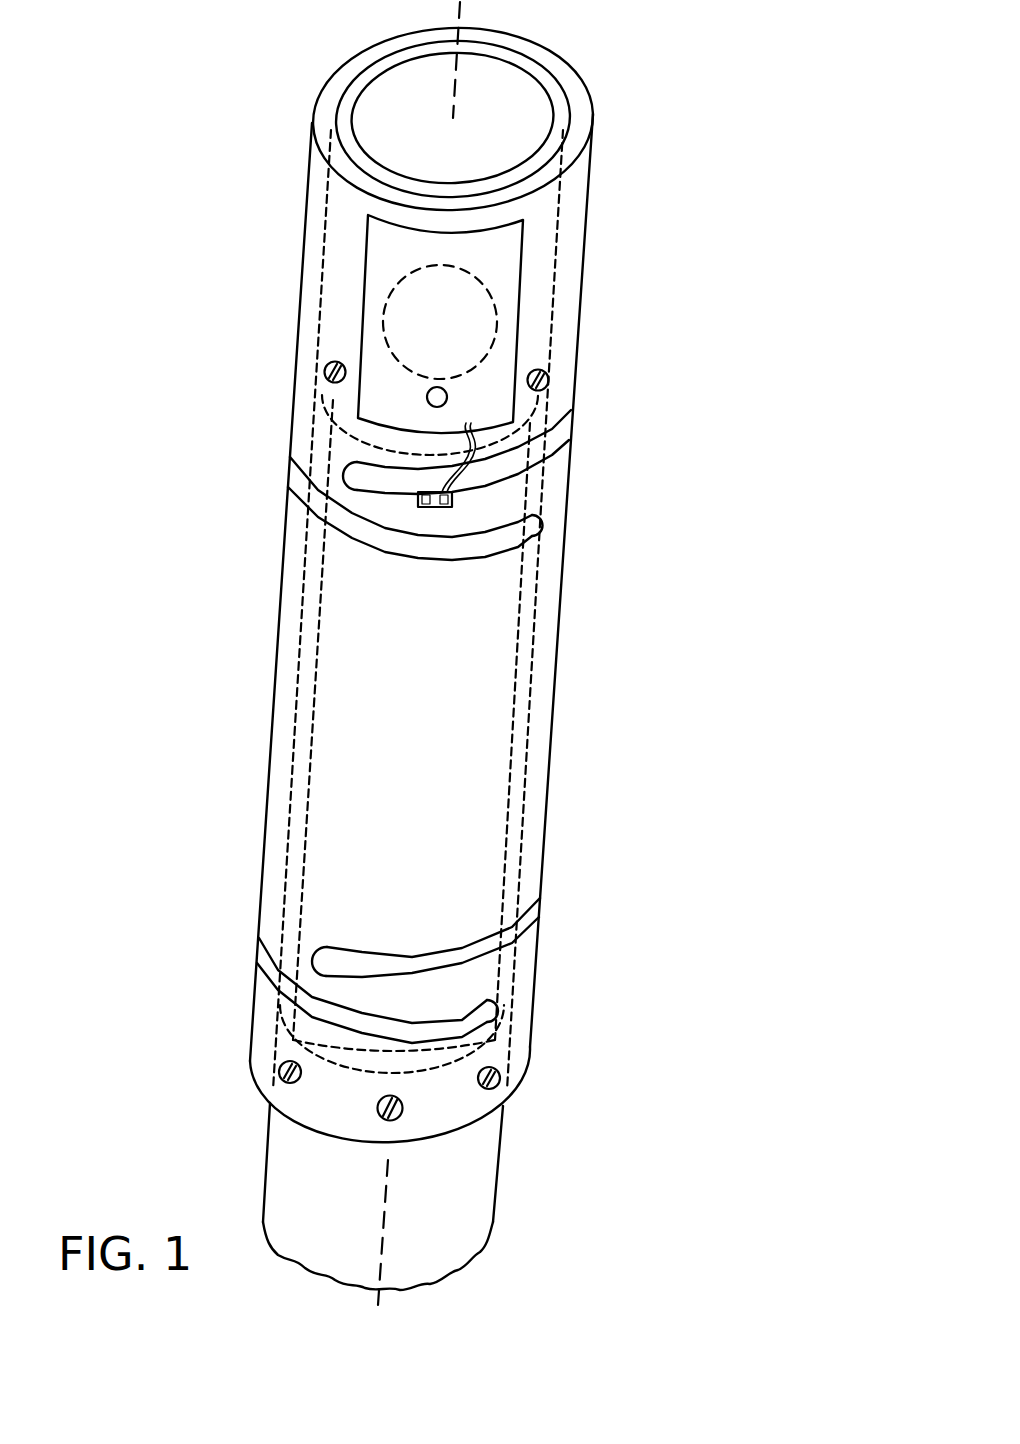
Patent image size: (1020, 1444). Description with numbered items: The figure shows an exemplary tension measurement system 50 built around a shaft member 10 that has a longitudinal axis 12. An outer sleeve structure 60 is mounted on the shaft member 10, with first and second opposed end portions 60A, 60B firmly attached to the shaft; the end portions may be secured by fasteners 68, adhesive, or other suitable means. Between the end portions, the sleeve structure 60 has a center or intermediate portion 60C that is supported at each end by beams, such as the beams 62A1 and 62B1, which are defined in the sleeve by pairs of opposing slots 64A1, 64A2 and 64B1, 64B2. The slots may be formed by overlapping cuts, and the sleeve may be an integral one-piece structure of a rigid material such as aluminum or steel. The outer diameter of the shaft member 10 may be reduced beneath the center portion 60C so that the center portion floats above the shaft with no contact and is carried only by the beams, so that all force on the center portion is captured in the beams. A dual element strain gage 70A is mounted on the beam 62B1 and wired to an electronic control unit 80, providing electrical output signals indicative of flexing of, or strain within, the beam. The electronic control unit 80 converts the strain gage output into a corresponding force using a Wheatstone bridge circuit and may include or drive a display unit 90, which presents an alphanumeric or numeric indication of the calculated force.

The shaft member 10 is at (487, 1157).
The longitudinal axis 12 is at (455, 102).
The tension measurement system 50 is at (735, 535).
The outer sleeve structure 60 is at (570, 657).
The first end portion 60A is at (262, 1020).
The second end portion 60B is at (320, 243).
The center portion 60C is at (295, 607).
The beam 62A1 is at (398, 1003).
The beam 62B1 is at (427, 517).
The slot 64A1 is at (470, 1000).
The slot 64A2 is at (541, 902).
The slot 64B1 is at (571, 410).
The slot 64B2 is at (480, 532).
The fasteners 68 is at (285, 1072).
The dual element strain gage 70A is at (452, 498).
The electronic control unit 80 is at (513, 278).
The display unit 90 is at (483, 250).